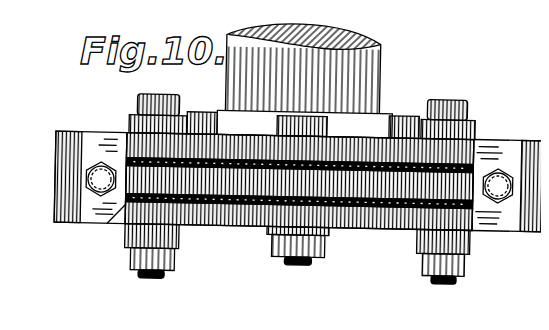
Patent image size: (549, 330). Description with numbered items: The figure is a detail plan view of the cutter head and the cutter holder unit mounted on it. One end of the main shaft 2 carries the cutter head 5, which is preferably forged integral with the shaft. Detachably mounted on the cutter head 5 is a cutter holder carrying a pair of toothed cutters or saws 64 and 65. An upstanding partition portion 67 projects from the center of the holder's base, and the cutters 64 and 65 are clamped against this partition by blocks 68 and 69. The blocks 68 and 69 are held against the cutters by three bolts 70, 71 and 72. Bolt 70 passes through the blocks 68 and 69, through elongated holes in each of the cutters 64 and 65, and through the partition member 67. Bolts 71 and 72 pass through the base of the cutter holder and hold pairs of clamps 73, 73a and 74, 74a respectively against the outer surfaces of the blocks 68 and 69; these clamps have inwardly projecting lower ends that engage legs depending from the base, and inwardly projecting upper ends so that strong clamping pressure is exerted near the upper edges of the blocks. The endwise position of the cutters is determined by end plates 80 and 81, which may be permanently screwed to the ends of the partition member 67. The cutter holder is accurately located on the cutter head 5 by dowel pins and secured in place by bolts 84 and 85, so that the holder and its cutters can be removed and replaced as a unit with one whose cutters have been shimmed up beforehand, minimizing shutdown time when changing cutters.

The main shaft 2 is at (372, 42).
The cutter head 5 is at (60, 125).
The toothed cutter 64 is at (233, 190).
The toothed cutter 65 is at (228, 158).
The partition portion 67 is at (228, 191).
The clamping block 68 is at (365, 219).
The clamping block 69 is at (357, 130).
The bolt 70 is at (292, 257).
The bolt 71 is at (146, 272).
The bolt 72 is at (440, 275).
The clamp 73 is at (120, 115).
The clamp 73a is at (118, 226).
The clamp 74 is at (467, 118).
The clamp 74a is at (467, 237).
The end plate 80 is at (103, 196).
The end plate 81 is at (470, 157).
The bolt 84 is at (88, 172).
The bolt 85 is at (492, 170).